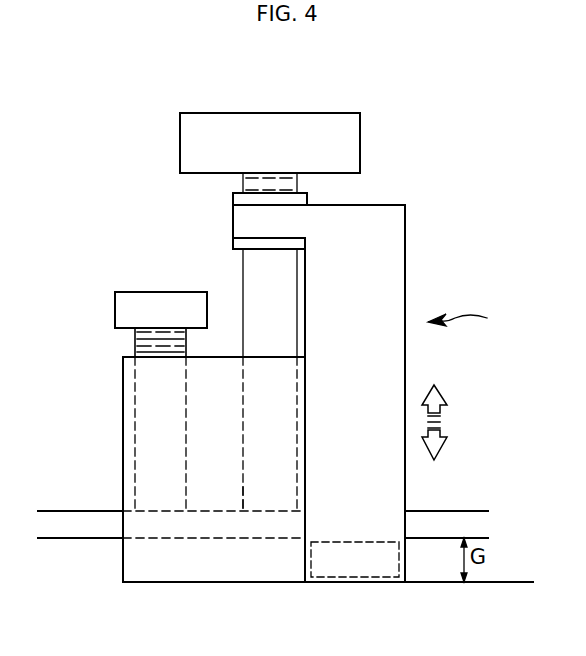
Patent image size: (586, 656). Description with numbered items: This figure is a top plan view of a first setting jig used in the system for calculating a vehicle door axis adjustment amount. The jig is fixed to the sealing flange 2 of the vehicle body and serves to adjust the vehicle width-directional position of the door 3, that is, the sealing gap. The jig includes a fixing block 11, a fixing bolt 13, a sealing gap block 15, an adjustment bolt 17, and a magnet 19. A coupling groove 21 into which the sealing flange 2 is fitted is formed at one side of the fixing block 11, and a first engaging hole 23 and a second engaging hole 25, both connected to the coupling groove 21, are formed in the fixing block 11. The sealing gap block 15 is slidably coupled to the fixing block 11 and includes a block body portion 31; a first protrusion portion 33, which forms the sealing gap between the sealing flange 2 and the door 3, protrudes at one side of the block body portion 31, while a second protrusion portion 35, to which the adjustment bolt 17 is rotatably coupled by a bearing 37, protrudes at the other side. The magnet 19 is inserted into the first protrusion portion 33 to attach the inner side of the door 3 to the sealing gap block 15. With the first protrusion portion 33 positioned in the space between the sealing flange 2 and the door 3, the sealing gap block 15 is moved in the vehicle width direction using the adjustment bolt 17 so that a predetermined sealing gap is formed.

The sealing flange 2 is at (476, 509).
The door 3 is at (518, 580).
The fixing block 11 is at (122, 404).
The fixing bolt 13 is at (157, 295).
The sealing gap block 15 is at (470, 319).
The adjustment bolt 17 is at (360, 143).
The magnet 19 is at (370, 578).
The coupling groove 21 is at (145, 537).
The first engaging hole 23 is at (135, 460).
The second engaging hole 25 is at (243, 487).
The block body portion 31 is at (401, 280).
The first protrusion portion 33 is at (331, 584).
The second protrusion portion 35 is at (232, 227).
The bearing 37 is at (232, 196).